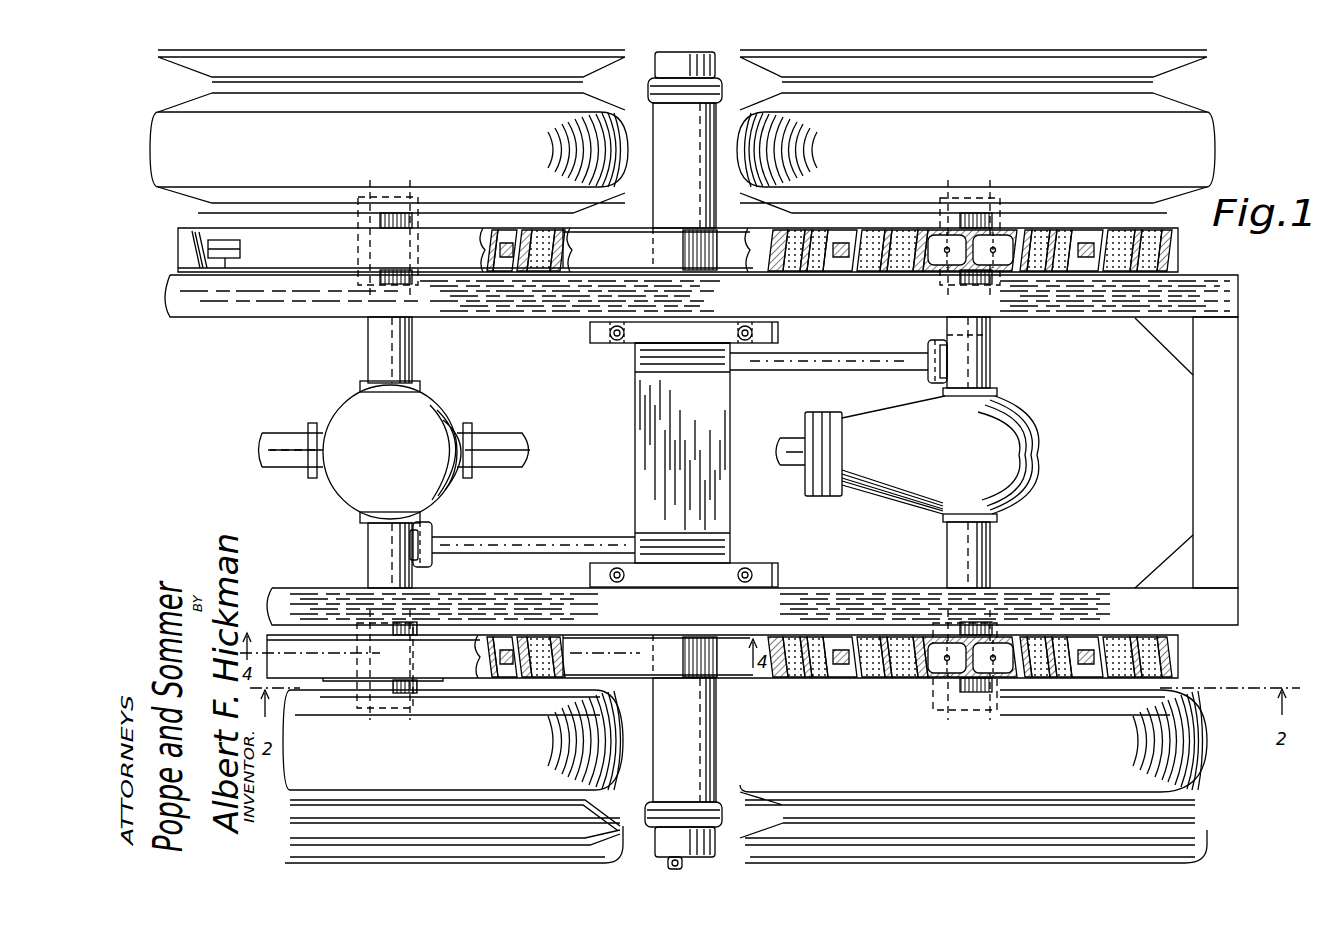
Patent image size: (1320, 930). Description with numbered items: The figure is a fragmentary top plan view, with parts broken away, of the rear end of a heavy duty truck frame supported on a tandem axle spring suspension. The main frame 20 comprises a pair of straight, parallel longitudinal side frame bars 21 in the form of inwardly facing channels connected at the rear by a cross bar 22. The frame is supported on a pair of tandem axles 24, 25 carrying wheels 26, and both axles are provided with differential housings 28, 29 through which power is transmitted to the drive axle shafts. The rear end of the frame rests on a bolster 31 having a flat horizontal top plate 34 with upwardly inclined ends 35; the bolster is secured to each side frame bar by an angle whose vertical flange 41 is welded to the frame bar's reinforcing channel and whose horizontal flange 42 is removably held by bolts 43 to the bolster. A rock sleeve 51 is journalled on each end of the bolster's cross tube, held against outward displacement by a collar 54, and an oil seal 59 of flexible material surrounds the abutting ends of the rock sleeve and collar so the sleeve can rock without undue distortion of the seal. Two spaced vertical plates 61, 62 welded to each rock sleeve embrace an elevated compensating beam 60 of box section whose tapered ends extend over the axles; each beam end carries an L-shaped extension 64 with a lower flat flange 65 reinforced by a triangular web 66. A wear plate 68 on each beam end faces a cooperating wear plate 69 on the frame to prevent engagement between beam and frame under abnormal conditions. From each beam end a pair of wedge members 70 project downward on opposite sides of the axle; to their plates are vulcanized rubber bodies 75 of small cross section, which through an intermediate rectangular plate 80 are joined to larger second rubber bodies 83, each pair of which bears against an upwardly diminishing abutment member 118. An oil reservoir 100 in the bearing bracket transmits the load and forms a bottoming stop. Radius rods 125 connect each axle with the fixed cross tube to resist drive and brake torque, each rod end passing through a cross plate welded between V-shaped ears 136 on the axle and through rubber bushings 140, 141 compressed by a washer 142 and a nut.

The main frame 20 is at (1178, 425).
The longitudinal side frame bars 21 is at (1238, 298).
The cross bar 22 is at (1193, 495).
The tandem axle 24 is at (410, 348).
The tandem axle 25 is at (990, 543).
The wheels 26 is at (190, 60).
The differential housing 28 is at (430, 395).
The differential housing 29 is at (1037, 460).
The bolster 31 is at (622, 437).
The flat horizontal top plate 34 is at (670, 455).
The upwardly inclined ends 35 is at (710, 365).
The vertical flange 41 is at (778, 333).
The horizontal flange 42 is at (692, 343).
The bolts 43 is at (615, 342).
The rock sleeve 51 is at (684, 452).
The collar 54 is at (715, 65).
The oil seal 59 is at (648, 92).
The compensating beam 60 is at (674, 222).
The vertical plate 61 is at (630, 228).
The vertical plate 62 is at (636, 272).
The L-shaped extension 64 is at (243, 240).
The lower flat flange 65 is at (230, 270).
The triangular web 66 is at (220, 235).
The wear plate 68 is at (990, 268).
The wear plate 69 is at (930, 265).
The wedge members 70 is at (845, 224).
The rubber body 75 is at (795, 230).
The intermediate rectangular plate 80 is at (812, 230).
The second rubber body 83 is at (775, 230).
The reservoir 100 is at (965, 230).
The abutment member 118 is at (168, 244).
The radius rods 125 is at (805, 370).
The V-shaped ears 136 is at (985, 338).
The rubber bushing 140 is at (432, 527).
The rubber bushing 141 is at (947, 355).
The washer 142 is at (928, 350).